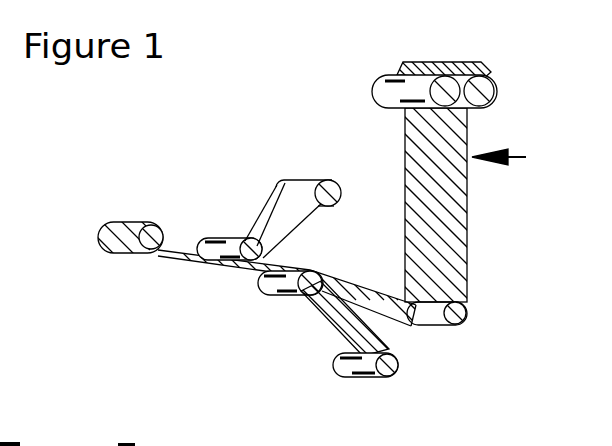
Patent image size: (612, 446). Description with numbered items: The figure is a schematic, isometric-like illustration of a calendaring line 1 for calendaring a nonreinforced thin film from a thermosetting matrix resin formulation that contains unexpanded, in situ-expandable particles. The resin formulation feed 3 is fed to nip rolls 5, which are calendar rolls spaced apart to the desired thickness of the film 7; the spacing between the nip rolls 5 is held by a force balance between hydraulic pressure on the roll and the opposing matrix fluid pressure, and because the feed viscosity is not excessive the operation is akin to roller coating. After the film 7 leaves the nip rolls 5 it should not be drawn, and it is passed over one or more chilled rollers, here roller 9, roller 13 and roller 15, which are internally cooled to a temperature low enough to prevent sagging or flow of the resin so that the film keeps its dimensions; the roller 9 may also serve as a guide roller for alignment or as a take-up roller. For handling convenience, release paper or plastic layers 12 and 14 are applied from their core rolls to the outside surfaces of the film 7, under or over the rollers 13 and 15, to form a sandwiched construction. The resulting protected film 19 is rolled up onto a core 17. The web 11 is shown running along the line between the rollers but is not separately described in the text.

The calendaring line 1 is at (507, 157).
The feed 3 is at (404, 62).
The nip rolls 5 is at (470, 77).
The film 7 is at (433, 187).
The roller 9 is at (456, 311).
The web strip 11 is at (357, 283).
The release layer 12 is at (345, 356).
The chilled roller 13 is at (307, 296).
The release layer 14 is at (285, 184).
The chilled roller 15 is at (245, 238).
The core 17 is at (158, 223).
The protected film 19 is at (97, 238).